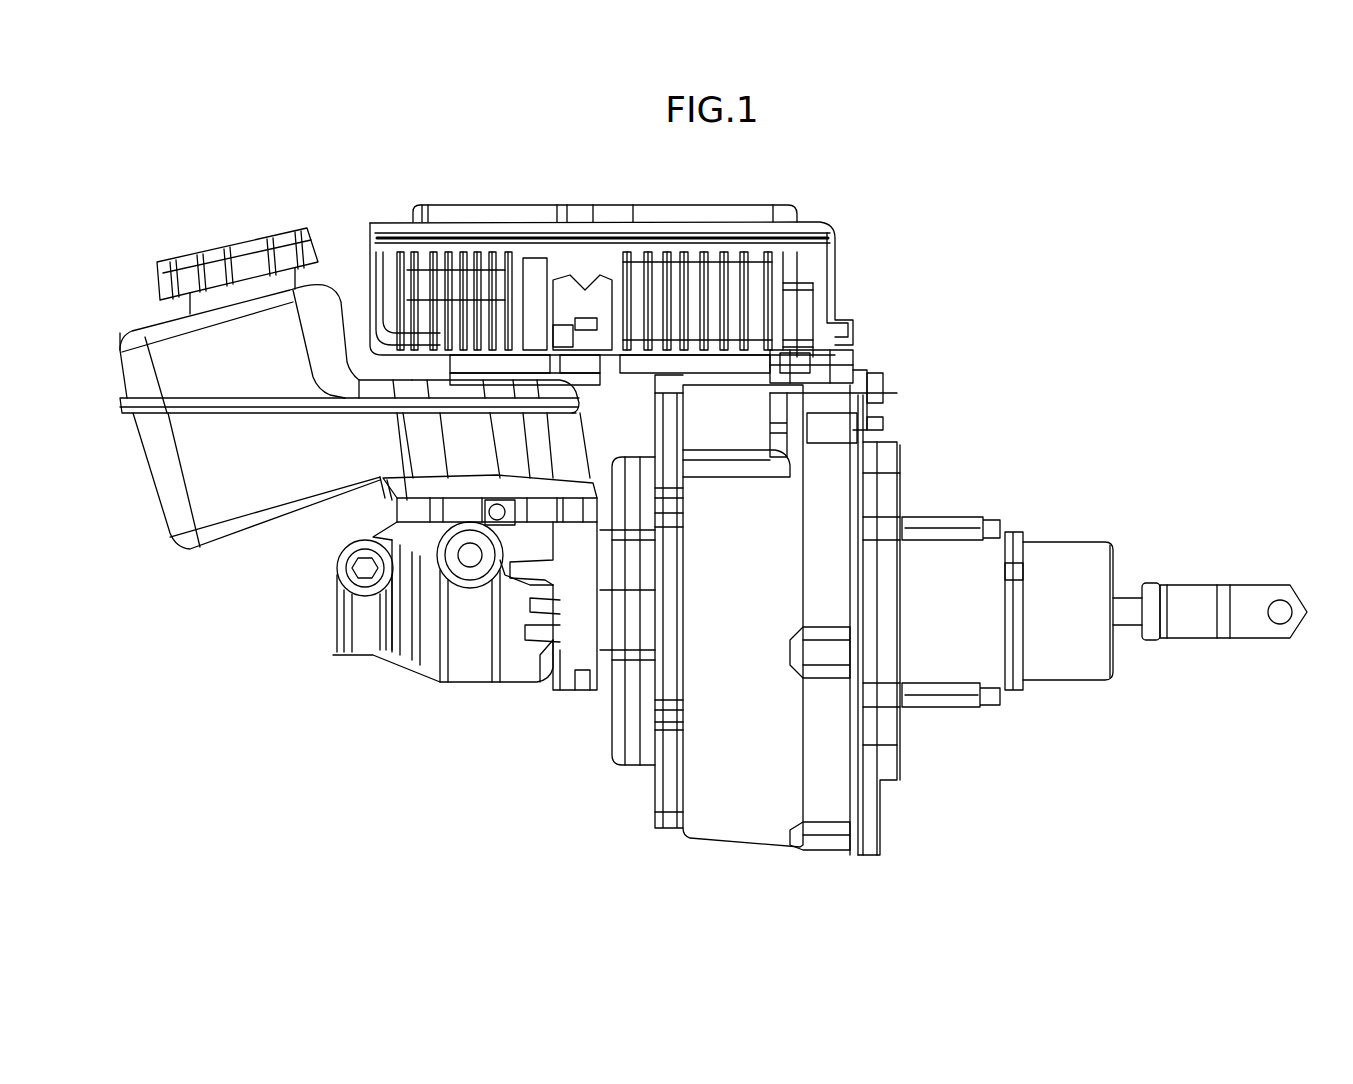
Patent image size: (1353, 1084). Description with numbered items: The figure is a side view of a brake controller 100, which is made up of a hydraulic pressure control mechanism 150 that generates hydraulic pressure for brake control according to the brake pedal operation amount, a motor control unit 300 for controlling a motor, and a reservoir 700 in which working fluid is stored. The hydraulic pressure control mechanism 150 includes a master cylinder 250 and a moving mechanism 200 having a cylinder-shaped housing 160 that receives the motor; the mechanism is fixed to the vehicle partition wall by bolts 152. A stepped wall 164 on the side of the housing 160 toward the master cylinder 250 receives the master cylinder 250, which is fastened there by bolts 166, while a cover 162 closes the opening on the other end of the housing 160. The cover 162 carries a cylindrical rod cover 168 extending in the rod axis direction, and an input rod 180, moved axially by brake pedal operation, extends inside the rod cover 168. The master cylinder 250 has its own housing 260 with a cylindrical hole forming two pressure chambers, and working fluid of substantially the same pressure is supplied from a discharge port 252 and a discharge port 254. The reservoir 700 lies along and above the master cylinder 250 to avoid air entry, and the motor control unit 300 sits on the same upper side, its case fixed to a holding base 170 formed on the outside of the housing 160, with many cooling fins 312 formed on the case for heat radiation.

The brake controller 100 is at (1003, 286).
The hydraulic pressure control mechanism 150 is at (430, 822).
The bolts 152 is at (948, 517).
The housing 160 is at (710, 850).
The cover 162 is at (903, 765).
The stepped wall 164 is at (633, 758).
The bolts 166 is at (537, 682).
The rod cover 168 is at (1043, 677).
The holding base 170 is at (862, 391).
The input rod 180 is at (1118, 598).
The moving mechanism 200 is at (548, 820).
The master cylinder 250 is at (478, 684).
The discharge port 252 is at (445, 683).
The discharge port 254 is at (362, 592).
The housing 260 is at (340, 633).
The motor control unit 300 is at (787, 210).
The fins 312 is at (796, 296).
The reservoir 700 is at (180, 553).